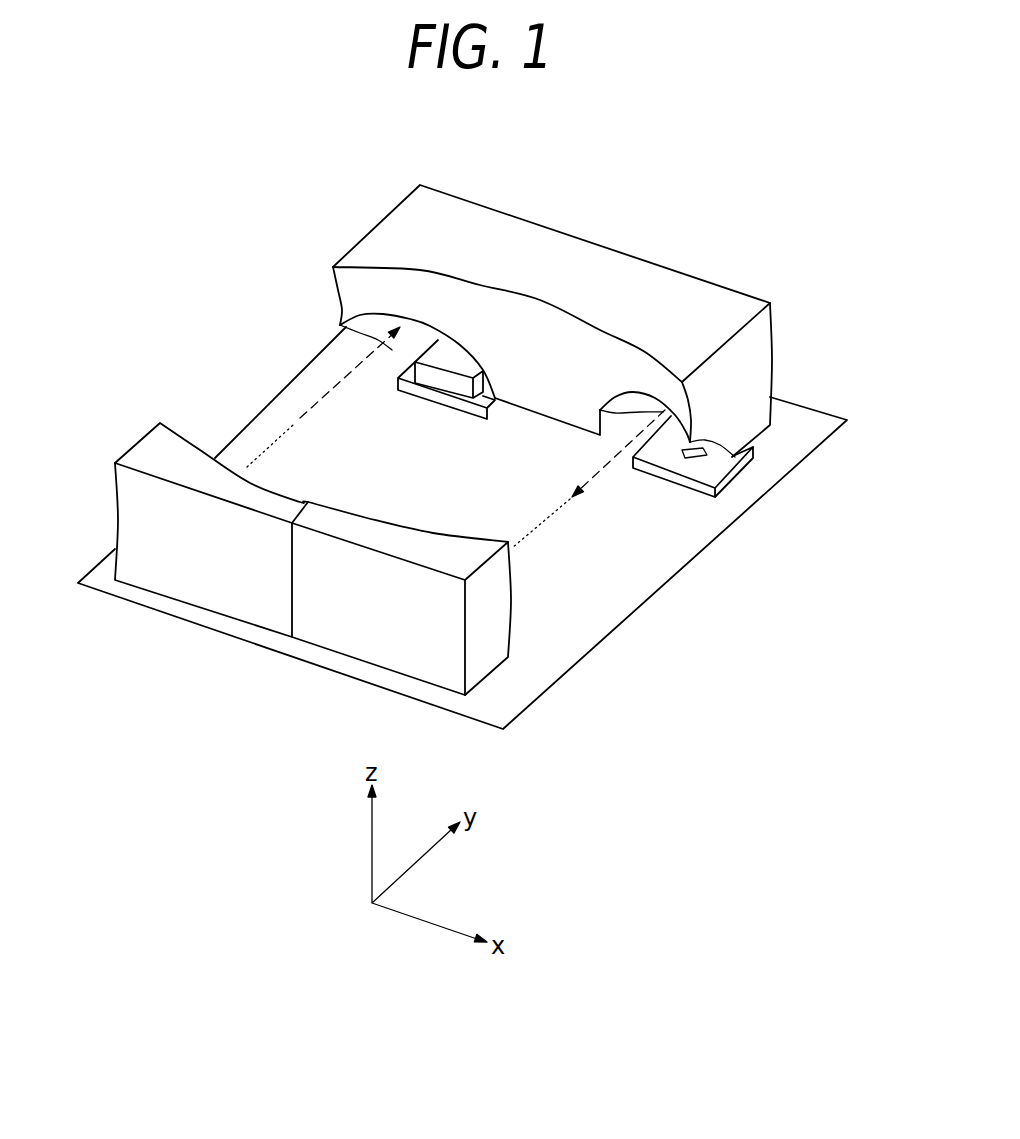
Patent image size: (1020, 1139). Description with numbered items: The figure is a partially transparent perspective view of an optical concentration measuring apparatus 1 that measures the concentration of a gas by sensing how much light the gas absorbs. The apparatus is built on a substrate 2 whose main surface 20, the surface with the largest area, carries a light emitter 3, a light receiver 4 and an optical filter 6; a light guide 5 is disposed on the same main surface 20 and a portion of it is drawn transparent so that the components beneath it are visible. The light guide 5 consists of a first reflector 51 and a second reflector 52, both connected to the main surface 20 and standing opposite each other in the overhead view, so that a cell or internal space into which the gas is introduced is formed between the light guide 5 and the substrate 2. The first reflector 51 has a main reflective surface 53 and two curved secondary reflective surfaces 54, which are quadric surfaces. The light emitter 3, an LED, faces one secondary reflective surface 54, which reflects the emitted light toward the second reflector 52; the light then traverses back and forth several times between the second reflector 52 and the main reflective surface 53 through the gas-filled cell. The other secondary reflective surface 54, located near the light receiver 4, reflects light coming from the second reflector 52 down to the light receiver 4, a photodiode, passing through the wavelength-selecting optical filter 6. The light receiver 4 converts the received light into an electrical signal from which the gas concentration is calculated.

The optical concentration measuring apparatus 1 is at (224, 276).
The substrate 2 is at (462, 528).
The main surface 20 is at (530, 680).
The light emitter 3 is at (670, 475).
The light receiver 4 is at (458, 402).
The light guide 5 is at (495, 436).
The optical filter 6 is at (410, 395).
The first reflector 51 is at (738, 367).
The second reflector 52 is at (197, 562).
The main reflective surface 53 is at (533, 333).
The secondary reflective surfaces 54 is at (348, 342).